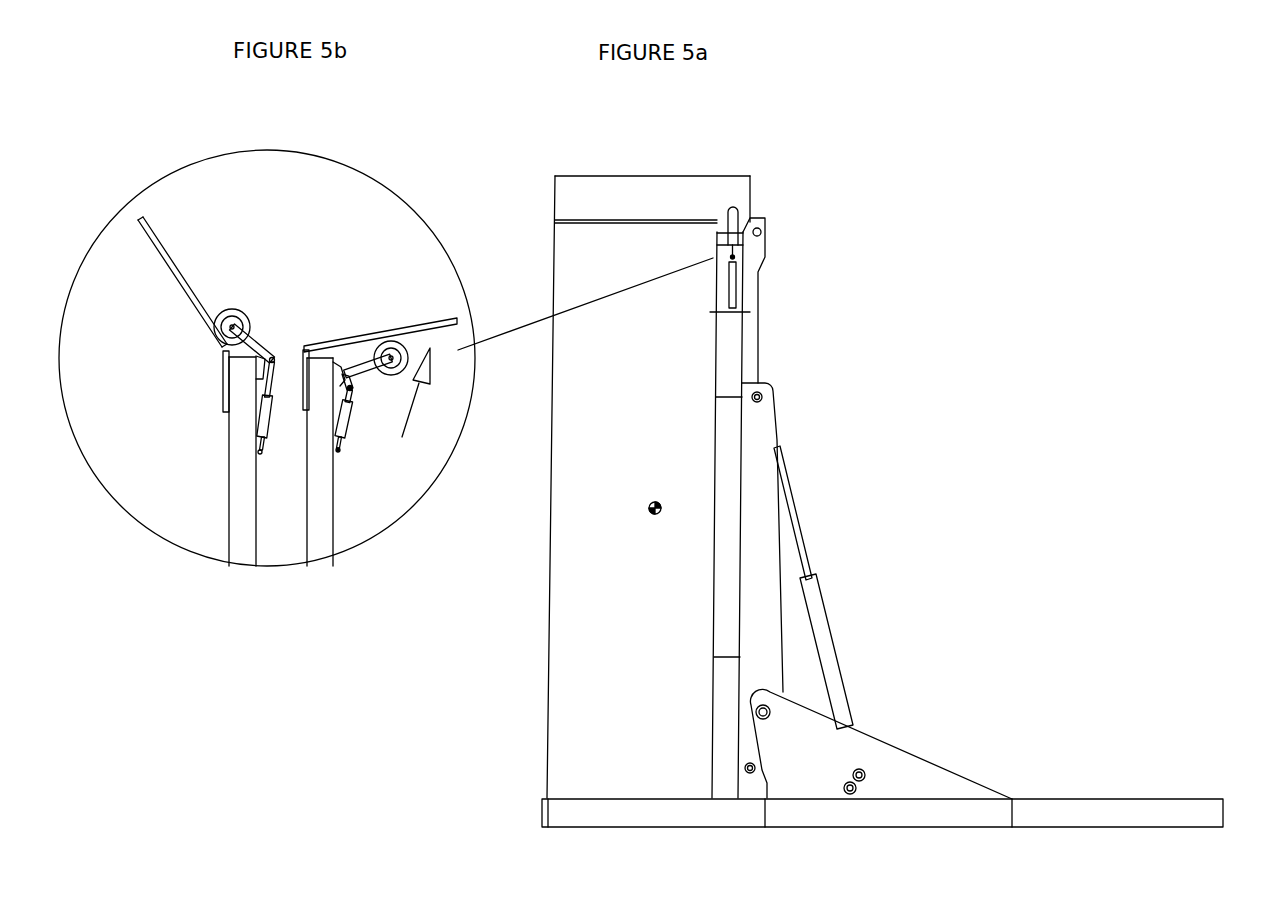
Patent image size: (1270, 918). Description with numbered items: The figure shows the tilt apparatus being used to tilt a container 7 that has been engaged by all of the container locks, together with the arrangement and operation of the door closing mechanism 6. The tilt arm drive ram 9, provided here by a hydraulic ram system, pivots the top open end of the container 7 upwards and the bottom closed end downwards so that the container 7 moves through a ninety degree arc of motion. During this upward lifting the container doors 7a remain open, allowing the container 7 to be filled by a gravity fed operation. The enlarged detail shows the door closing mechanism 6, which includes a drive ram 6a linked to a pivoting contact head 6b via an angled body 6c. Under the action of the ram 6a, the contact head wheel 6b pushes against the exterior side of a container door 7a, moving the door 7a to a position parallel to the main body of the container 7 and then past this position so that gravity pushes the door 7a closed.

In FIG. 5B, the door closing mechanism 6 is at (316, 210).
In FIG. 5B, the drive ram 6a is at (350, 430).
In FIG. 5B, the pivoting contact head 6b is at (389, 341).
In FIG. 5B, the angled body 6c is at (370, 380).
In FIG. 5A, the container 7 is at (573, 675).
In FIG. 5B, the container door 7a is at (430, 322).
In FIG. 5A, the container door 7a is at (737, 197).
In FIG. 5A, the tilt arm drive ram 9 is at (833, 613).